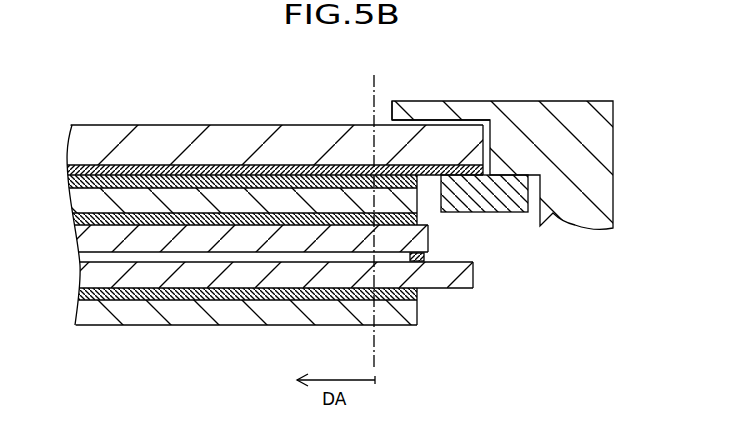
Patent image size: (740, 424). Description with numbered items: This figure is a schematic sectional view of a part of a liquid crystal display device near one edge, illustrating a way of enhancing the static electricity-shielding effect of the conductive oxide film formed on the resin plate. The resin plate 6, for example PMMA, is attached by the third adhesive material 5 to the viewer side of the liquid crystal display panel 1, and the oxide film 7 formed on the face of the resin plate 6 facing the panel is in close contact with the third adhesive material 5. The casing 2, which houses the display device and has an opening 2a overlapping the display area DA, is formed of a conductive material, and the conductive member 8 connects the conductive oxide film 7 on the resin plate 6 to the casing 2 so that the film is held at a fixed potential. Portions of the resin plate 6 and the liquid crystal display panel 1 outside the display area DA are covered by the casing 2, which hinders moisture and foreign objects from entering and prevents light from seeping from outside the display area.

The liquid crystal display panel 1 is at (60, 190).
The casing 2 is at (553, 128).
The opening 2a is at (396, 110).
The third adhesive material 5 is at (142, 181).
The resin plate 6 is at (247, 143).
The oxide film 7 is at (333, 170).
The conductive member 8 is at (492, 193).